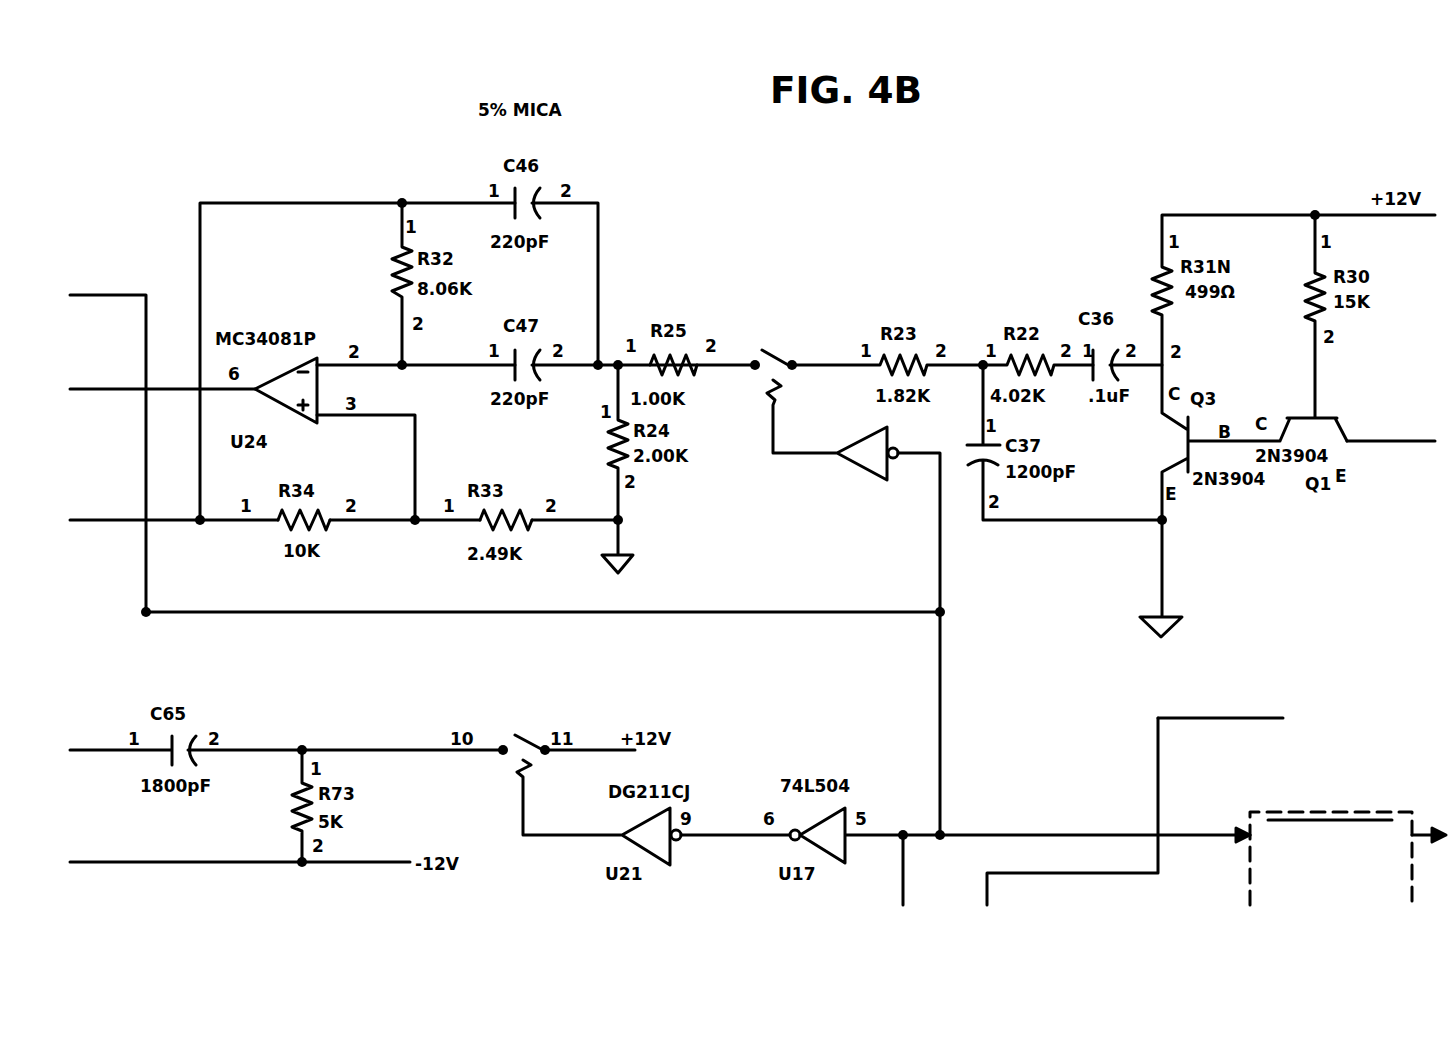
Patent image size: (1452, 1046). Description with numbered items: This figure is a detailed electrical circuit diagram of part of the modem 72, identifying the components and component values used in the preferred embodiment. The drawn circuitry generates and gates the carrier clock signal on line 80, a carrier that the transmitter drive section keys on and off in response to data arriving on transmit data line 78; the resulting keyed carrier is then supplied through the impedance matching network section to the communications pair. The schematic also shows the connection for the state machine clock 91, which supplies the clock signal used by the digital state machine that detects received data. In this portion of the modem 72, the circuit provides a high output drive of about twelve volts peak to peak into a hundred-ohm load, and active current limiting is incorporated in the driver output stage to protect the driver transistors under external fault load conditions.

The modem 72 is at (763, 284).
The line carrying carrier clock signal 80 is at (1346, 440).
The state machine clock input U1-14 91 is at (1190, 718).
The transmit data line 78 is at (1190, 832).